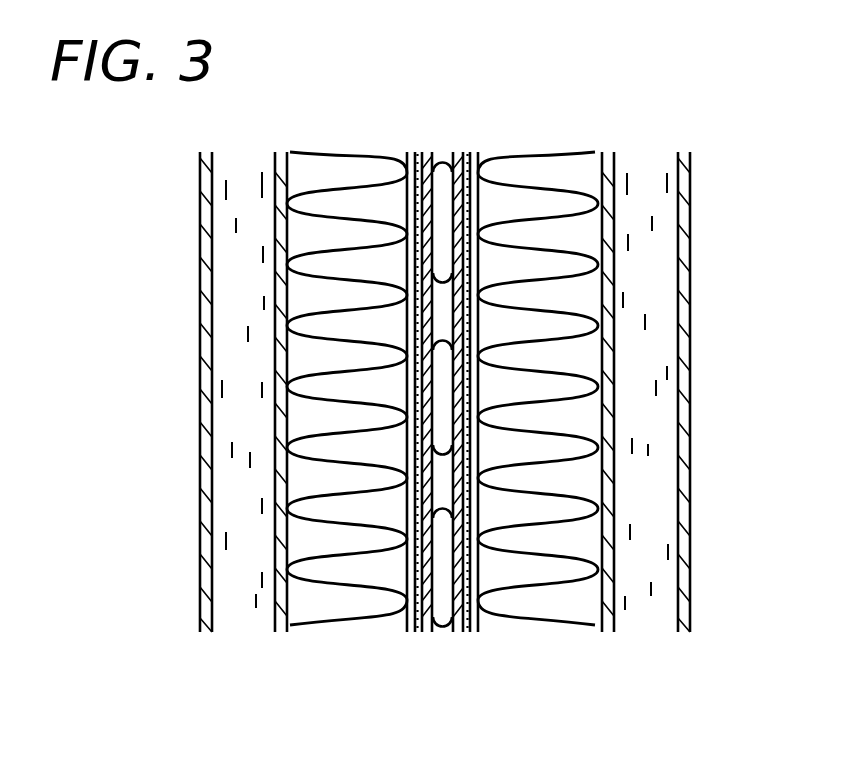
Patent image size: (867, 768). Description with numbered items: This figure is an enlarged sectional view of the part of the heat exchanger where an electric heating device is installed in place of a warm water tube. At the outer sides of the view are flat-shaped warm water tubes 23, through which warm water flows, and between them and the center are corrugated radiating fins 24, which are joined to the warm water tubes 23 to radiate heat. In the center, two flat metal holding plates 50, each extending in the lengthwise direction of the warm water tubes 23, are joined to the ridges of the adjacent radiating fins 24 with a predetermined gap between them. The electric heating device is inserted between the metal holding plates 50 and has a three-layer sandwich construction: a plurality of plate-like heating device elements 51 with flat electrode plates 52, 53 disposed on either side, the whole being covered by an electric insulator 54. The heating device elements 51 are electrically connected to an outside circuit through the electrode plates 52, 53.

The warm water tube 23 is at (200, 262).
The corrugated radiating fin 24 is at (293, 151).
The metal holding plate 50 is at (409, 632).
The heating device element 51 is at (438, 157).
The electrode plate 52 is at (462, 150).
The electrode plate 53 is at (420, 150).
The electric insulator 54 is at (424, 150).